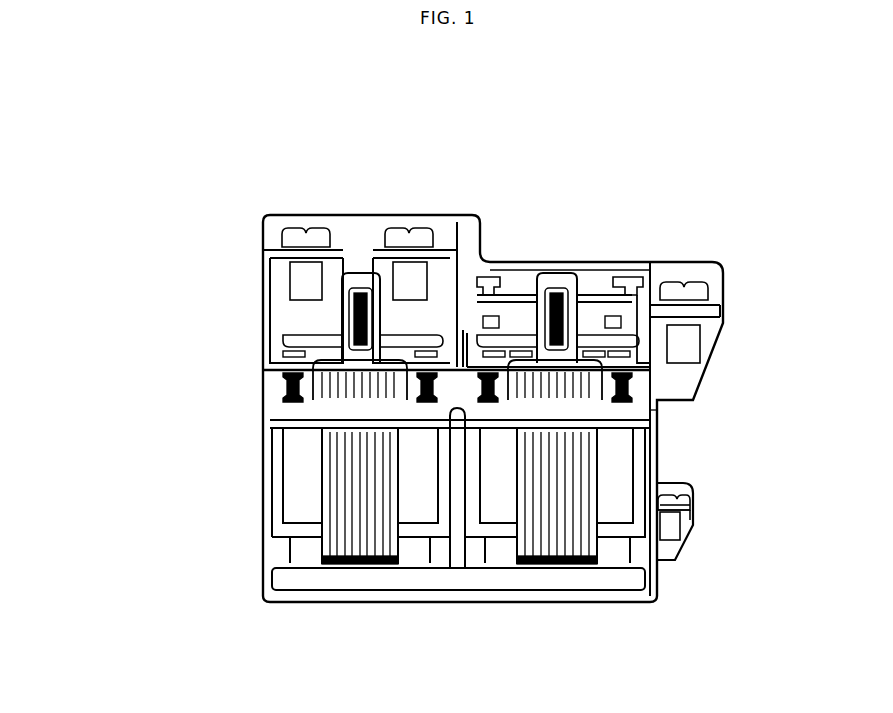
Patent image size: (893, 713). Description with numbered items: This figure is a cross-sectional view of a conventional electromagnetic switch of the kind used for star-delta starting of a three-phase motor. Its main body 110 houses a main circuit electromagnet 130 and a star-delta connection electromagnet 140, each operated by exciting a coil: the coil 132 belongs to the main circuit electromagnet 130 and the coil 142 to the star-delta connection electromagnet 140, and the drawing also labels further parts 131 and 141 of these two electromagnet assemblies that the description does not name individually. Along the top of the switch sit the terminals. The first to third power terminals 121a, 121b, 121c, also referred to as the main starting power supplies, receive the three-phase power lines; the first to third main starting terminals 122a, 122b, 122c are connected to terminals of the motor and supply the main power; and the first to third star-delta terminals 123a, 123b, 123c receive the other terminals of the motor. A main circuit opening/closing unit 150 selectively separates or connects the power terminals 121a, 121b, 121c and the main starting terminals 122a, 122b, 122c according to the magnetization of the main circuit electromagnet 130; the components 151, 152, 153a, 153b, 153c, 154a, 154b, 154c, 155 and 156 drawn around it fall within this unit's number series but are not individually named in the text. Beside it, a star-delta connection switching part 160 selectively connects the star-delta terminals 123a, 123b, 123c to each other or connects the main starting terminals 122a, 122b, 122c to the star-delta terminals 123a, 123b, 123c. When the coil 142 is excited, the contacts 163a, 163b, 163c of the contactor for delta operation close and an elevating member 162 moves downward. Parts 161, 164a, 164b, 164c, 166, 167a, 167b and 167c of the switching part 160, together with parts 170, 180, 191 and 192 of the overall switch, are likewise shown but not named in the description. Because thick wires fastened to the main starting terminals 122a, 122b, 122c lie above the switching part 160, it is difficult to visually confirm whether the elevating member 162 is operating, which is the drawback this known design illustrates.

The main body 110 is at (263, 487).
The first power terminal 121a is at (265, 252).
The second power terminal 121b is at (257, 260).
The third power terminal 121c is at (424, 292).
The first main starting terminal 122a is at (457, 230).
The second main starting terminal 122b is at (522, 217).
The third main starting terminal 122c is at (595, 217).
The first star-delta terminal 123a is at (713, 307).
The second star-delta terminal 123b is at (769, 412).
The third star-delta terminal 123c is at (749, 411).
The main circuit electromagnet 130 is at (300, 500).
The first bracket 131 is at (308, 560).
The coil 132 is at (352, 565).
The star-delta connection electromagnet 140 is at (615, 500).
The second bracket 141 is at (612, 565).
The coil 142 is at (548, 565).
The main circuit opening/closing unit 150 is at (362, 262).
The support plate 151 is at (263, 425).
The coil 152 is at (333, 352).
The first fixed contact 153a is at (263, 357).
The second fixed contact 153b is at (258, 363).
The third fixed contact 153c is at (323, 363).
The first movable contact plate 154a is at (330, 322).
The second movable contact plate 154b is at (261, 320).
The third movable contact plate 154c is at (390, 320).
The pin 155 is at (283, 390).
The partition wall 156 is at (263, 297).
The star-delta connection switching part 160 is at (527, 280).
The support 161 is at (590, 395).
The elevating member 162 is at (655, 420).
The contact 163a is at (622, 330).
The contact 163b is at (688, 281).
The contact 163c is at (666, 281).
The first terminal 164a is at (607, 298).
The second terminal 164b is at (704, 249).
The third terminal 164c is at (721, 345).
The connecting bar 166 is at (578, 298).
The first connecting piece 167a is at (490, 277).
The second connecting piece 167b is at (586, 215).
The third connecting piece 167c is at (620, 249).
The base plate 170 is at (455, 583).
The cover 180 is at (262, 213).
The clip 191 is at (692, 505).
The fastening groove 192 is at (285, 220).